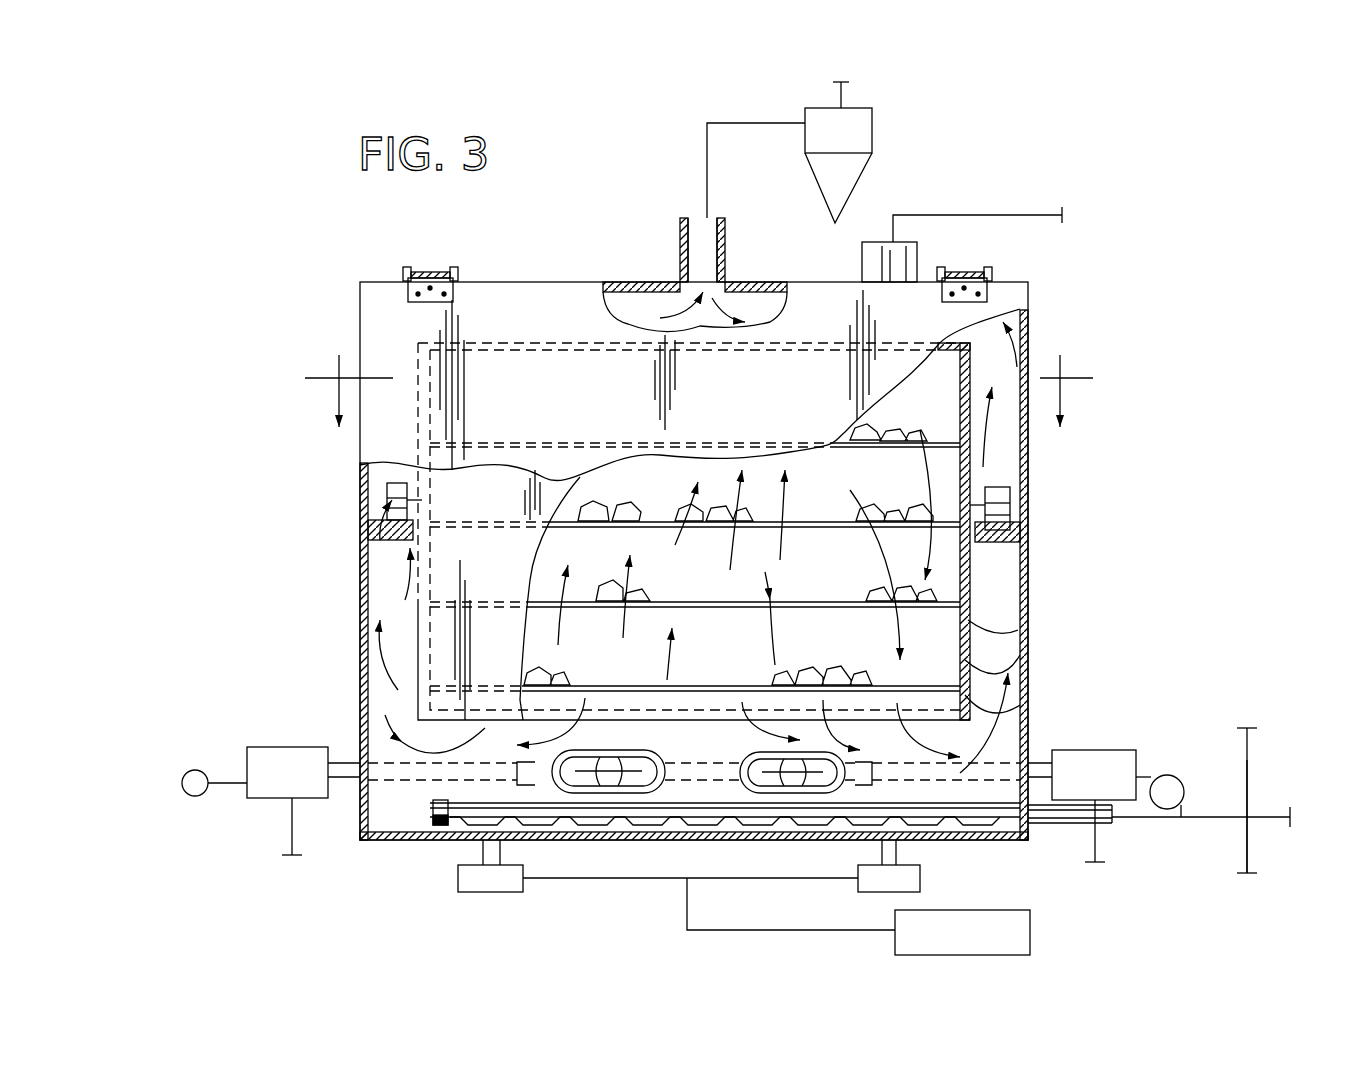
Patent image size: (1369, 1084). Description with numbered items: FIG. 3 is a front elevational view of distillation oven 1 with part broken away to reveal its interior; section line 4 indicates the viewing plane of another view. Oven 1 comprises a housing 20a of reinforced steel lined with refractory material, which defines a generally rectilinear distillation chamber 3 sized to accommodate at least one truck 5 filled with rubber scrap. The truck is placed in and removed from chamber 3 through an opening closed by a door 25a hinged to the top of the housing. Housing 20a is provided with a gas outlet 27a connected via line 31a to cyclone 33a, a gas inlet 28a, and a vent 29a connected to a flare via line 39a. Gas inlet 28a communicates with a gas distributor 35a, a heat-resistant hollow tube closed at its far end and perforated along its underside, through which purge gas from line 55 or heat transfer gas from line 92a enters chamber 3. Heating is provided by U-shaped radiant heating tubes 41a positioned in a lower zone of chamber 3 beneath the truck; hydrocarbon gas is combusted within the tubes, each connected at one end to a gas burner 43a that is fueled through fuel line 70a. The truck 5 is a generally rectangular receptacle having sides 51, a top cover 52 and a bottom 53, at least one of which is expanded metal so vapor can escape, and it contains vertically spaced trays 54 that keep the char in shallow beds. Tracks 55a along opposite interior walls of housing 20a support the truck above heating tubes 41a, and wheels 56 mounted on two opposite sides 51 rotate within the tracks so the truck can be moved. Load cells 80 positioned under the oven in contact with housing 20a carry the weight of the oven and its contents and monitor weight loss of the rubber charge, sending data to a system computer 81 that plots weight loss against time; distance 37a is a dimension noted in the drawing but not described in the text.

The distillation oven 1 is at (345, 280).
The distillation chamber 3 is at (1005, 600).
The section line 4 is at (699, 385).
The truck 5 is at (679, 505).
The housing 20a is at (1025, 655).
The door 25a is at (390, 438).
The gas outlet 27a is at (725, 248).
The gas inlet 28a is at (1110, 825).
The vent 29a is at (917, 260).
The line 31a is at (707, 180).
The cyclone 33a is at (872, 128).
The gas distributor 35a is at (433, 810).
The height dimension 37a is at (1240, 862).
The line 39a is at (935, 215).
The U-shaped radiant heating tubes 41a is at (740, 765).
The gas burner 43a is at (315, 747).
The sides 51 is at (437, 623).
The top cover 52 is at (957, 333).
The bottom 53 is at (1000, 720).
The trays 54 is at (960, 497).
The line 55 is at (1255, 818).
The tracks 55a is at (385, 545).
The wheels 56 is at (385, 510).
The fuel line 70a is at (1112, 888).
The load cells 80 is at (498, 893).
The system computer 81 is at (1030, 940).
The line 92a is at (1247, 760).